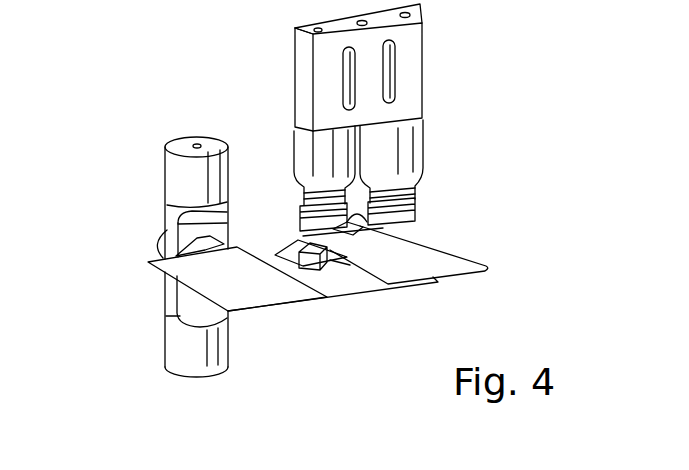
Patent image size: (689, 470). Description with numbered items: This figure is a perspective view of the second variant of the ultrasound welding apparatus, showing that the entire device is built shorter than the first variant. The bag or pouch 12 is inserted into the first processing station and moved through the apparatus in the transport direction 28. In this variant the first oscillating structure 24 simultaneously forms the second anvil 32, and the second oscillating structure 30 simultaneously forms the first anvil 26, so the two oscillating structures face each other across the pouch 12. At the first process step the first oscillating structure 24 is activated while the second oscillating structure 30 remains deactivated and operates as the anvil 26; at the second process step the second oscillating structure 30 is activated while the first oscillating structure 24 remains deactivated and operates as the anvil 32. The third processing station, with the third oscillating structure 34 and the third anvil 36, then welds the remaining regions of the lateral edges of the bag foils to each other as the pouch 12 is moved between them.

The bag or pouch 12 is at (242, 278).
The first oscillating structure 24 is at (139, 324).
The anvil 26 is at (183, 172).
The transport direction 28 is at (100, 274).
The second oscillating structure 30 is at (140, 193).
The second anvil 32 is at (180, 346).
The third oscillating structure 34 is at (408, 88).
The third anvil 36 is at (347, 288).